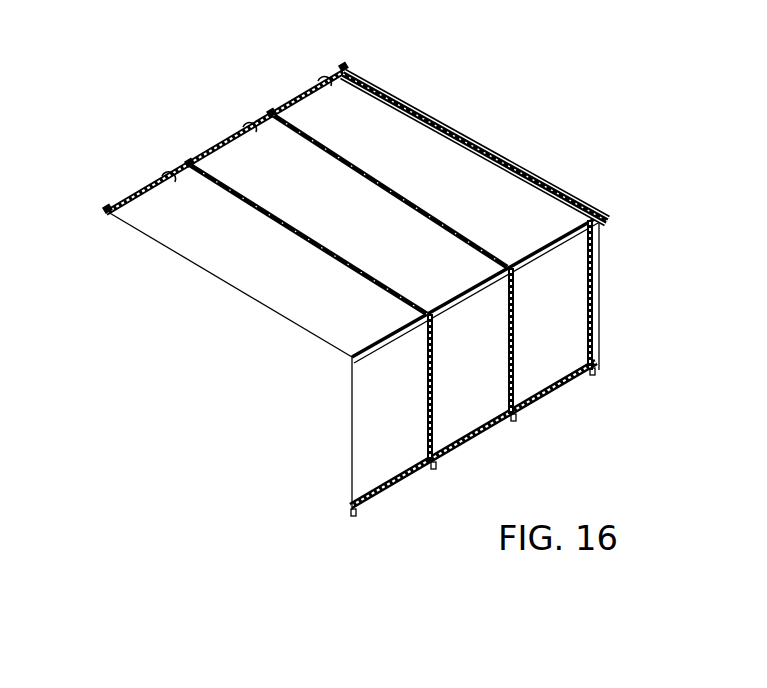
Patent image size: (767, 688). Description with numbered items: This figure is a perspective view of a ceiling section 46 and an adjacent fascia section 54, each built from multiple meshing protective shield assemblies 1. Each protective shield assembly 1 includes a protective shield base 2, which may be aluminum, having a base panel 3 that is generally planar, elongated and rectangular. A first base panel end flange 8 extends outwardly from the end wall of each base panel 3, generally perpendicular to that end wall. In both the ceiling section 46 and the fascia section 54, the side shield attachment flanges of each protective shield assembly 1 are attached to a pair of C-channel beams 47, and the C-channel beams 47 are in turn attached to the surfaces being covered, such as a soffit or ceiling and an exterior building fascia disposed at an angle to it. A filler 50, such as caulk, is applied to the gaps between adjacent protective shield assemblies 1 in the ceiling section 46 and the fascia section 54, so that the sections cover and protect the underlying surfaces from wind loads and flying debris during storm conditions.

The protective shield assembly 1 is at (128, 196).
The protective shield base 2 is at (346, 238).
The base panel 3 is at (340, 326).
The first base panel end flange 8 is at (330, 88).
The ceiling section 46 is at (472, 133).
The C-channel beam 47 is at (106, 213).
The filler 50 is at (290, 229).
The fascia section 54 is at (603, 295).